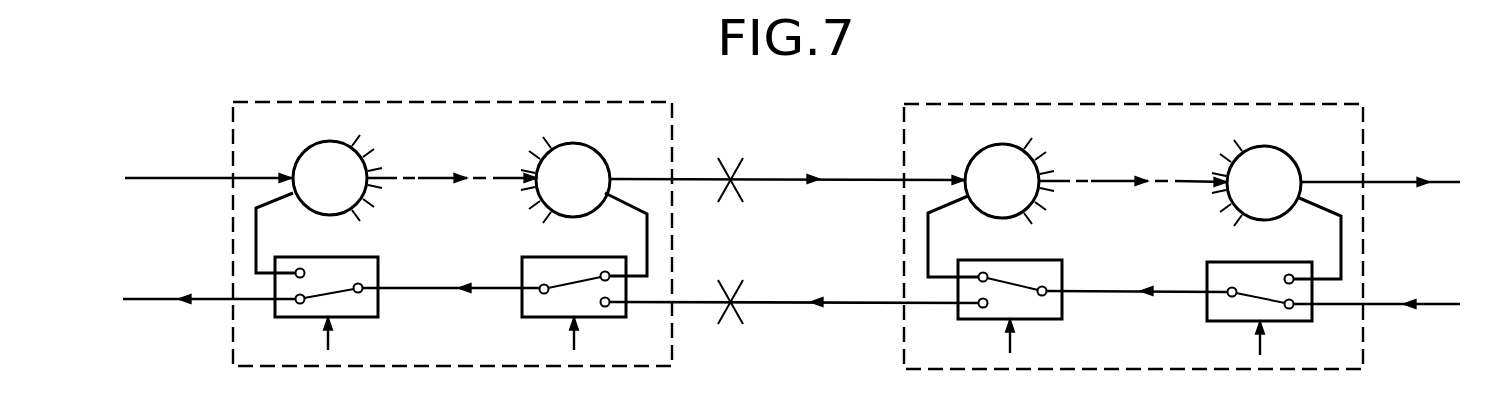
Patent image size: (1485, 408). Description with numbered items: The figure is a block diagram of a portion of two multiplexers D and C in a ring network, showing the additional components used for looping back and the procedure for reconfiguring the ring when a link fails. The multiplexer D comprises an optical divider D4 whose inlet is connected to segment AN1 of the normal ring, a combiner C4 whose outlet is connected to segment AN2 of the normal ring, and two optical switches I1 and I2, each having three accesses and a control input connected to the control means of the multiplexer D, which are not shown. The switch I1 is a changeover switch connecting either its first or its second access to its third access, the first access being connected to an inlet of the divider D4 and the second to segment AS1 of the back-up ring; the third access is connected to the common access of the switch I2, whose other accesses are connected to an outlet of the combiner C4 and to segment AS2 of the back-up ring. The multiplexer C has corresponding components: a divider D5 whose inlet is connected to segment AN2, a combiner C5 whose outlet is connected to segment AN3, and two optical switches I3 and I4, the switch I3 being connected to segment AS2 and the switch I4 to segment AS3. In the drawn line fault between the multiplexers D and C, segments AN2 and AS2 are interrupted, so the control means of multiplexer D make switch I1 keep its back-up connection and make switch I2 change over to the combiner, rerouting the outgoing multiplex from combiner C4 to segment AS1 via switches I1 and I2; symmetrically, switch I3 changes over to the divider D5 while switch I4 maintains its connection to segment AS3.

The multiplexer D is at (452, 102).
The multiplexer C is at (1153, 104).
The optical divider D4 is at (312, 156).
The combiner C4 is at (590, 160).
The divider D5 is at (990, 159).
The combiner C5 is at (1281, 162).
The optical switch I1 is at (328, 284).
The optical switch I2 is at (575, 286).
The optical switch I3 is at (1014, 288).
The optical switch I4 is at (1262, 291).
The segment of the normal ring AN1 is at (206, 178).
The segment of the normal ring AN2 is at (781, 179).
The segment of the normal ring AN3 is at (1401, 182).
The segment of the back-up ring AS1 is at (208, 299).
The segment of the back-up ring AS2 is at (781, 302).
The segment of the back-up ring AS3 is at (1386, 304).